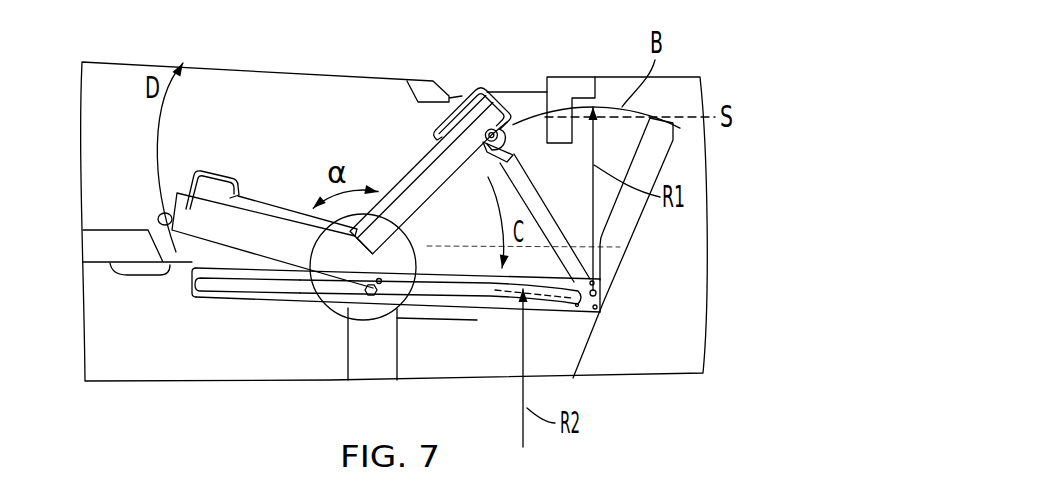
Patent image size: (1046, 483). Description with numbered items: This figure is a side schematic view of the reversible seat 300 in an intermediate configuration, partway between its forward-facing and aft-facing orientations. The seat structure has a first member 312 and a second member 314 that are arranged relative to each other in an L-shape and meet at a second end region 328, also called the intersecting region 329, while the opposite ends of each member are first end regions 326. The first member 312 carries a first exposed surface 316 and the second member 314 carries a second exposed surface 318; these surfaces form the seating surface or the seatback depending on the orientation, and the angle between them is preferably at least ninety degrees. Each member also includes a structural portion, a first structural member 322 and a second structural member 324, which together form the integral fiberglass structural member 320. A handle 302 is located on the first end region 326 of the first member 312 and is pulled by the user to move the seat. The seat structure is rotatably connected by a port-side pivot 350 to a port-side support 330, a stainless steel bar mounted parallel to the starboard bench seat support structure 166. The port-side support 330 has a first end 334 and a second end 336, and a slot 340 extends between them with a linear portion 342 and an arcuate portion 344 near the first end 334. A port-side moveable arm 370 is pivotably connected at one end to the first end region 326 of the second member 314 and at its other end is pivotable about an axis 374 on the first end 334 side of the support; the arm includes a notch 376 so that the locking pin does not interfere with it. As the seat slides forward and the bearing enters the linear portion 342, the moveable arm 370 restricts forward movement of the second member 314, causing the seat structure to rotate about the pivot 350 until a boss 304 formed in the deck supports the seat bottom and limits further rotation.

The starboard bench seat support structure 166 is at (103, 322).
The reversible seat 300 is at (349, 155).
The handle 302 is at (158, 218).
The boss 304 is at (355, 352).
The first member 312 is at (270, 225).
The second member 314 is at (427, 168).
The first exposed surface 316 is at (255, 198).
The second exposed surface 318 is at (413, 157).
The structural member 320 is at (467, 175).
The first structural member 322 is at (258, 257).
The second structural member 324 is at (440, 207).
The first end region 326 is at (197, 203).
The second end region 328 is at (390, 192).
The intersecting region 329 is at (372, 296).
The port-side support 330 is at (193, 290).
The first end 334 is at (576, 315).
The second end 336 is at (193, 302).
The slot 340 is at (272, 287).
The linear portion 342 is at (303, 290).
The arcuate portion 344 is at (497, 292).
The port-side pivot 350 is at (380, 284).
The port-side moveable arm 370 is at (577, 272).
The axis 374 is at (598, 298).
The notch 376 is at (502, 157).